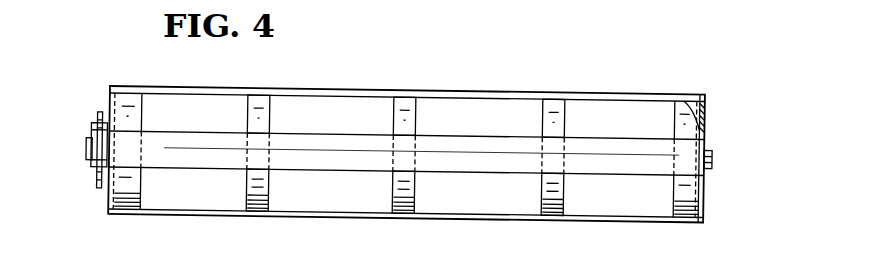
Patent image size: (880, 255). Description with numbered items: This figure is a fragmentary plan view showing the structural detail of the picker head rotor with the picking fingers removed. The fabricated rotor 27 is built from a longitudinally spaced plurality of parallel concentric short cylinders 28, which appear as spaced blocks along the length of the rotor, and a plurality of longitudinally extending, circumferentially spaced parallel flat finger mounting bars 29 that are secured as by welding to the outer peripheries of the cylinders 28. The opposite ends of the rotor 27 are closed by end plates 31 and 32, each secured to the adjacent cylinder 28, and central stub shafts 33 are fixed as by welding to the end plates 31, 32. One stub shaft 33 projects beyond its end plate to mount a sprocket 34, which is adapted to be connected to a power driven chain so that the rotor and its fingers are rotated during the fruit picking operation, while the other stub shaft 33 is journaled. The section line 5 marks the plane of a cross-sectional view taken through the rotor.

The section line 5- 5 is at (563, 73).
The fabricated rotor 27 is at (658, 88).
The short cylinders 28 is at (264, 116).
The finger mounting bars 29 is at (362, 137).
The end plate 31 is at (110, 100).
The end plate 32 is at (705, 108).
The stub shaft 33 is at (92, 149).
The sprocket 34 is at (99, 186).